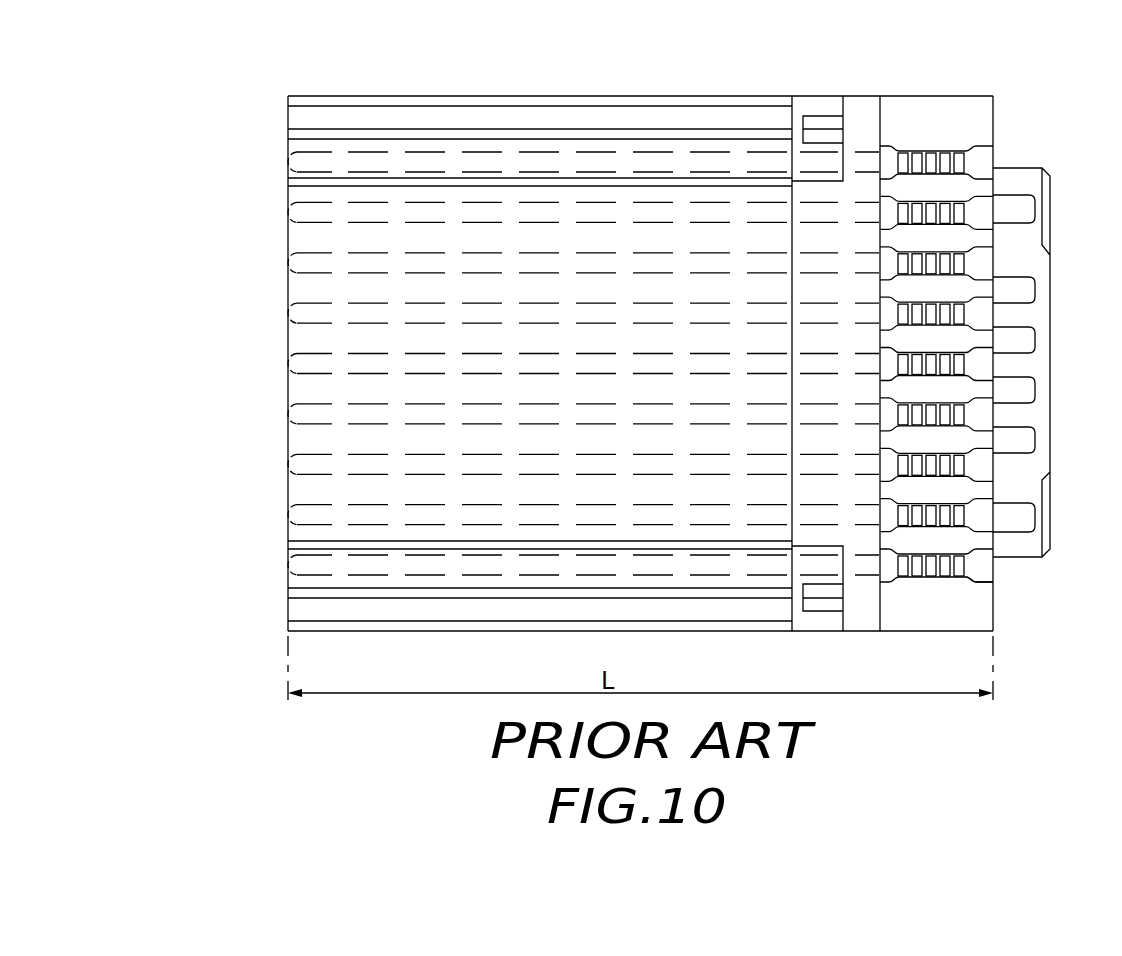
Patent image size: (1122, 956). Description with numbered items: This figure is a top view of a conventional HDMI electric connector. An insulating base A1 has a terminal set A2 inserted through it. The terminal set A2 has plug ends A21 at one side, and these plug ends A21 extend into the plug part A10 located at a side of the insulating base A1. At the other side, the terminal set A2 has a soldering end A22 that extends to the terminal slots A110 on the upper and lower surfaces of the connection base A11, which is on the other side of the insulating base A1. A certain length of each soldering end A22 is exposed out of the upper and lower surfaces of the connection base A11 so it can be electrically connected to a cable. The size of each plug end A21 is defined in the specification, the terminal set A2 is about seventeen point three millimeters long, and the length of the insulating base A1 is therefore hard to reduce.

The plug part A10 is at (515, 363).
The plug ends A21 is at (312, 473).
The insulating base A1 is at (937, 342).
The connection base A11 is at (981, 342).
The soldering end A22 is at (977, 163).
The terminal slots A110 is at (982, 580).
The terminal set A2 is at (1047, 112).